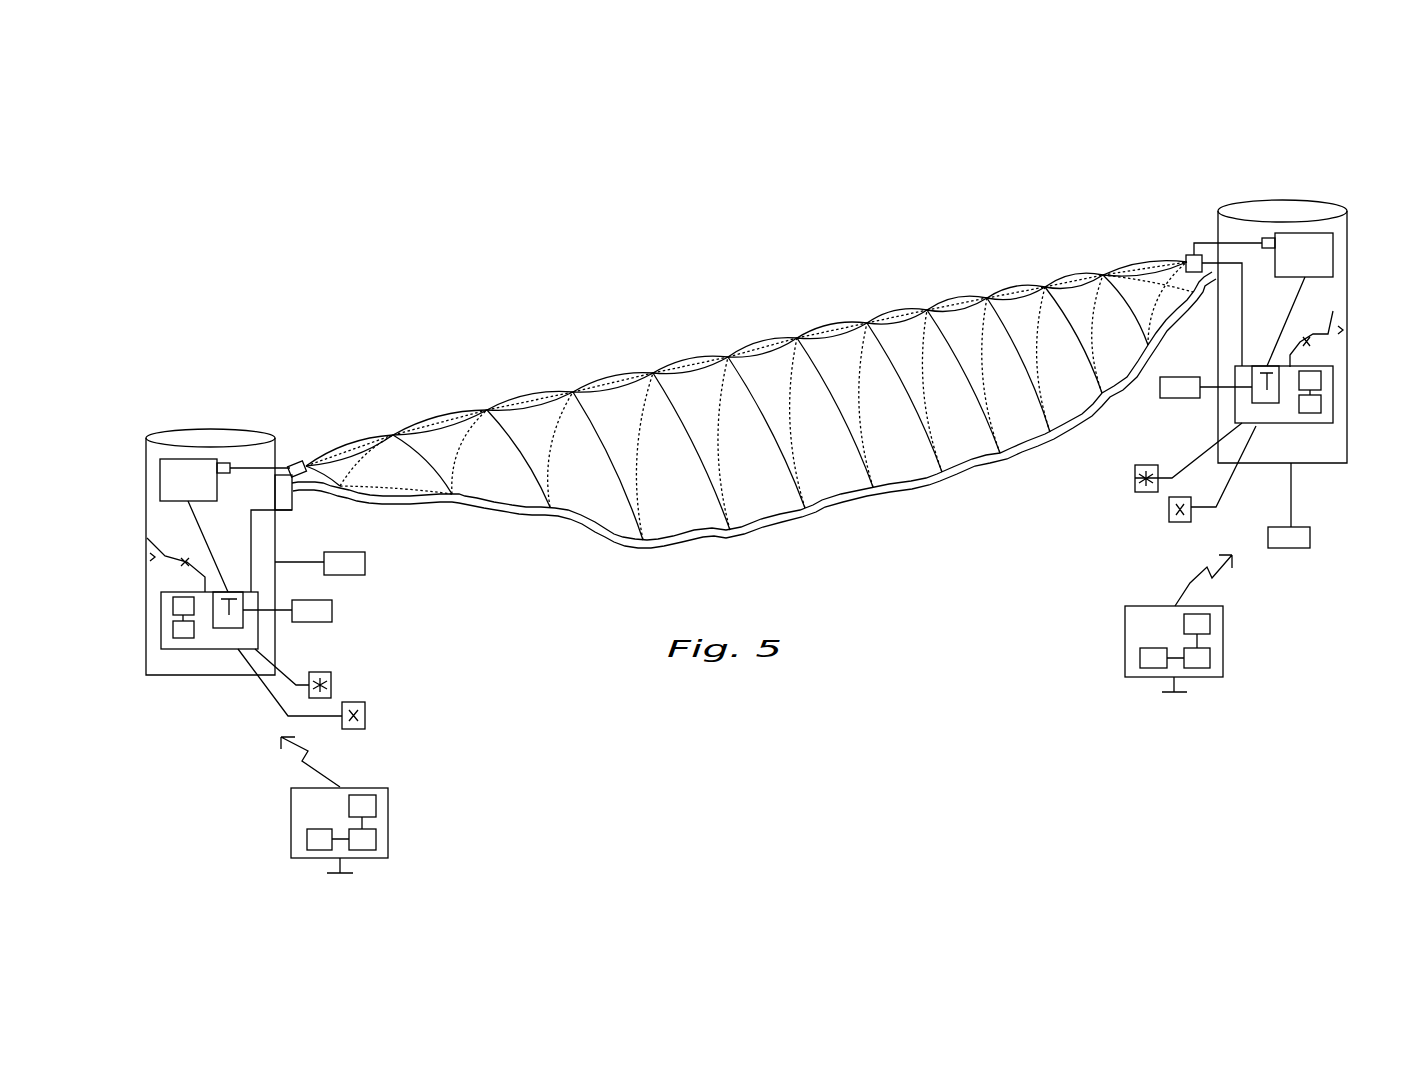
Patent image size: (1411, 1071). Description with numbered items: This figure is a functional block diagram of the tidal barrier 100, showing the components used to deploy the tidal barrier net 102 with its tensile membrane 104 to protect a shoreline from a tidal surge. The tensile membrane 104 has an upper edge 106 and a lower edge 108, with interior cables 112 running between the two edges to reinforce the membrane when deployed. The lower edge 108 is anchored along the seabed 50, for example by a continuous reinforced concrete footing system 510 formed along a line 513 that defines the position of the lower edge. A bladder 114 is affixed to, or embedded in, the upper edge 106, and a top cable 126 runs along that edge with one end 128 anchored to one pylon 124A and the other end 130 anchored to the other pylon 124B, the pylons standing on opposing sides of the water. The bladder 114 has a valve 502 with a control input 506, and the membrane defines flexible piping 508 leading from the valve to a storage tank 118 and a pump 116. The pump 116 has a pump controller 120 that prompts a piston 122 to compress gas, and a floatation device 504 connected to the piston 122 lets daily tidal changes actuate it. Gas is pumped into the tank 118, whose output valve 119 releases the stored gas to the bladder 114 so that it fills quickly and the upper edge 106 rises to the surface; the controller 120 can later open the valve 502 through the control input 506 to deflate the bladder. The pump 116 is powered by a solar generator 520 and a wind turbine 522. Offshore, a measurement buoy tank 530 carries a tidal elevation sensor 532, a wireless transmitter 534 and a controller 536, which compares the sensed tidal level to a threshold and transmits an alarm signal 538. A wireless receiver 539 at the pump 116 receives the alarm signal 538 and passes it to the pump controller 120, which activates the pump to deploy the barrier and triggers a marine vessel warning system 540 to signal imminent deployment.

The seabed 50 is at (995, 553).
The tidal barrier 100 is at (929, 234).
The tidal barrier net 102 is at (751, 289).
The tensile membrane 104 is at (820, 477).
The upper edge 106 is at (803, 325).
The lower edge 108 is at (774, 520).
The interior cables 112 is at (938, 504).
The bladder 114 is at (608, 385).
The pump 116 is at (209, 649).
The storage tank 118 is at (746, 412).
The output valve 119 is at (227, 460).
The pump controller 120 is at (185, 638).
The piston 122 is at (230, 610).
The pylon 124A is at (1248, 200).
The pylon 124B is at (208, 427).
The top cable 126 is at (533, 397).
The end of top cable 128 is at (1215, 260).
The other end of top cable 130 is at (289, 466).
The valve 502 is at (302, 462).
The floatation device 504 is at (747, 499).
The control input 506 is at (257, 550).
The flexible piping 508 is at (268, 467).
The reinforced concrete footing system 510 is at (983, 470).
The line 513 is at (588, 530).
The solar generator 520 is at (331, 677).
The wind turbine 522 is at (365, 708).
The measurement buoy tank 530 is at (337, 820).
The tidal elevation sensor 532 is at (307, 838).
The wireless transmitter 534 is at (376, 805).
The controller 536 is at (376, 838).
The alarm signal 538 is at (147, 538).
The wireless receiver 539 is at (172, 603).
The marine vessel warning system 540 is at (792, 519).